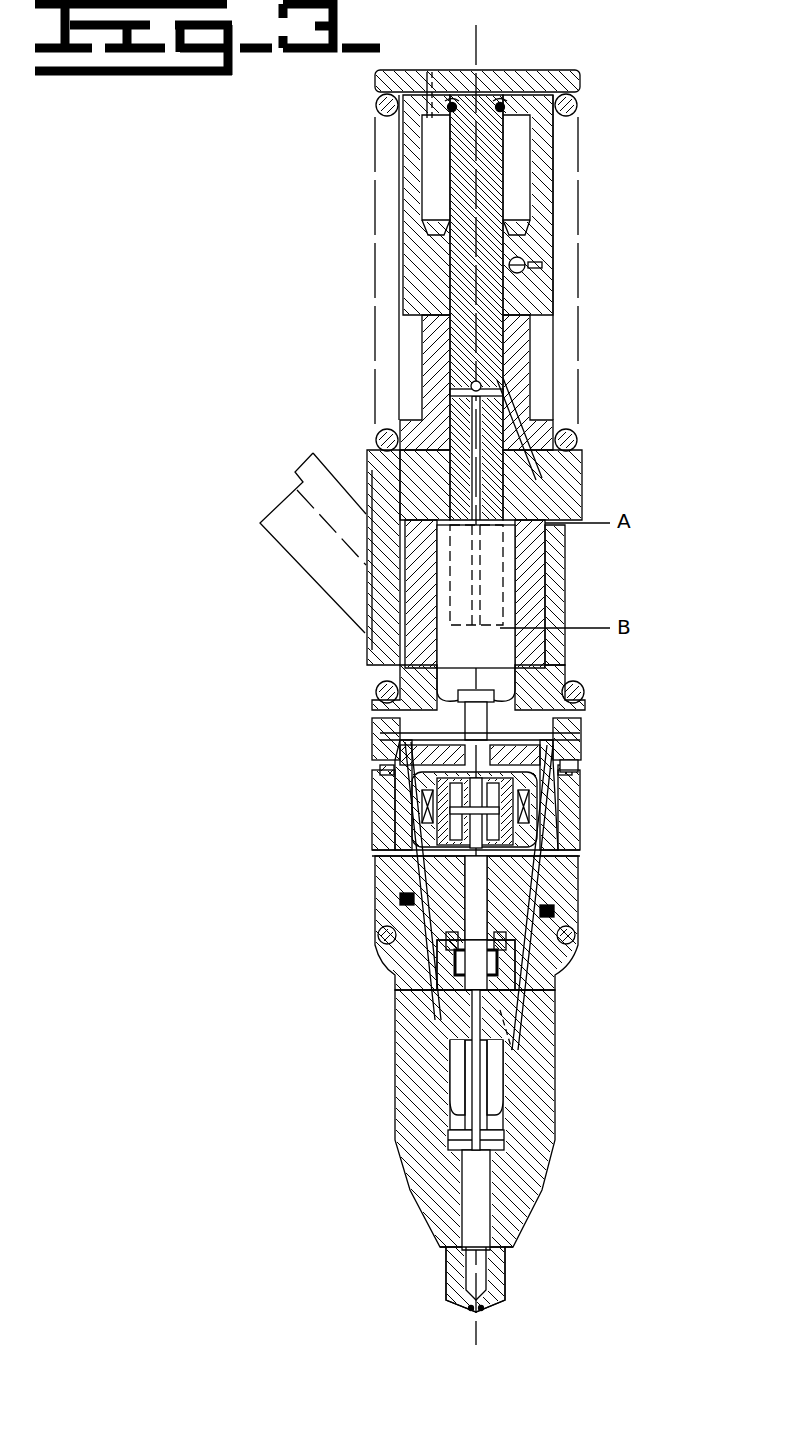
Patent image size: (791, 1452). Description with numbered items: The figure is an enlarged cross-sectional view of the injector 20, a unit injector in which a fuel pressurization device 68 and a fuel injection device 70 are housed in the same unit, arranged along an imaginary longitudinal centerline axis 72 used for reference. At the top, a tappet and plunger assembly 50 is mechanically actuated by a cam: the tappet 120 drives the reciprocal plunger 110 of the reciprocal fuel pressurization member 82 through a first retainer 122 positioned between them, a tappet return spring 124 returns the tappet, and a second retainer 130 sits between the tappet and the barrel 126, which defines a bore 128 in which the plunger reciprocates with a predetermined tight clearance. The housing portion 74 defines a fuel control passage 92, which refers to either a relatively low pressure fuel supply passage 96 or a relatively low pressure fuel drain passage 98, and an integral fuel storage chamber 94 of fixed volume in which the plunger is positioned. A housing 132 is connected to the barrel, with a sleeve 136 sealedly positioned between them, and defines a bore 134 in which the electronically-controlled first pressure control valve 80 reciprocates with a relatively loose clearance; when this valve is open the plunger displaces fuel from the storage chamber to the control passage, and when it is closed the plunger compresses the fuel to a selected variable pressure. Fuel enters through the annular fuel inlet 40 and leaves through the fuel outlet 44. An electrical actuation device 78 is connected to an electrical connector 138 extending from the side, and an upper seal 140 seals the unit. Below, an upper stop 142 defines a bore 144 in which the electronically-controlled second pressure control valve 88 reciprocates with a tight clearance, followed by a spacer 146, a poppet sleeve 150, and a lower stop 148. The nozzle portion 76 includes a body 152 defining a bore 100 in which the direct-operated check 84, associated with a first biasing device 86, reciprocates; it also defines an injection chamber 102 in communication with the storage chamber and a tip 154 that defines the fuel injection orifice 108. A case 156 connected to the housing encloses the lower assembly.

The injector 20 is at (605, 413).
The annular fuel inlet 40 is at (385, 733).
The fuel outlet 44 is at (575, 790).
The tappet and plunger assembly 50 is at (590, 78).
The fuel pressurization device 68 is at (365, 337).
The fuel injection device 70 is at (350, 973).
The longitudinal centerline axis 72 is at (478, 48).
The housing portion 74 is at (592, 612).
The nozzle portion 76 is at (565, 1070).
The electrical actuation device 78 is at (592, 813).
The first pressure control valve 80 is at (488, 696).
The reciprocal fuel pressurization member 82 is at (515, 160).
The direct-operated check 84 is at (525, 1170).
The first biasing device 86 is at (540, 1032).
The second pressure control valve 88 is at (555, 888).
The fuel control passage 92 is at (378, 733).
The fuel storage chamber 94 is at (506, 660).
The fuel supply passage 96 is at (386, 742).
The fuel drain passage 98 is at (386, 970).
The bore 100 is at (545, 1010).
The injection chamber 102 is at (400, 1094).
The fuel injection orifice 108 is at (505, 1320).
The reciprocal plunger 110 is at (545, 195).
The tappet 120 is at (590, 70).
The first retainer 122 is at (505, 103).
The tappet return spring 124 is at (373, 245).
The barrel 126 is at (420, 400).
The bore 128 is at (545, 370).
The second retainer 130 is at (530, 260).
The housing 132 is at (583, 495).
The bore 134 is at (555, 733).
The sleeve 136 is at (540, 582).
The electrical connector 138 is at (261, 521).
The upper seal 140 is at (580, 690).
The upper stop 142 is at (560, 912).
The bore 144 is at (395, 886).
The spacer 146 is at (560, 940).
The lower stop 148 is at (560, 968).
The poppet sleeve 150 is at (545, 985).
The body 152 is at (540, 1125).
The tip 154 is at (505, 1272).
The case 156 is at (505, 1225).